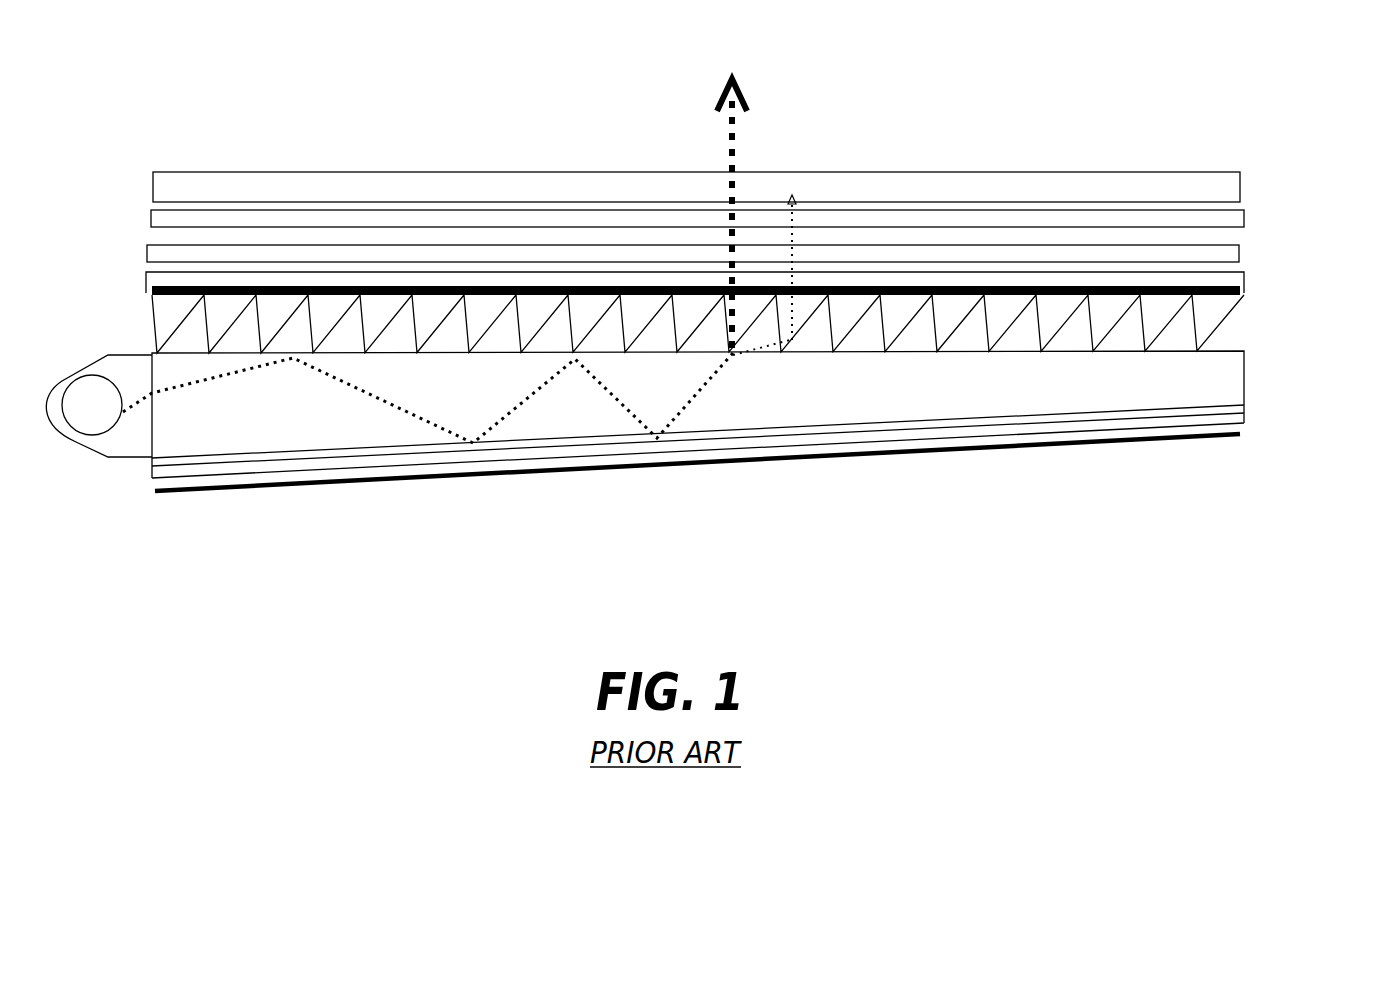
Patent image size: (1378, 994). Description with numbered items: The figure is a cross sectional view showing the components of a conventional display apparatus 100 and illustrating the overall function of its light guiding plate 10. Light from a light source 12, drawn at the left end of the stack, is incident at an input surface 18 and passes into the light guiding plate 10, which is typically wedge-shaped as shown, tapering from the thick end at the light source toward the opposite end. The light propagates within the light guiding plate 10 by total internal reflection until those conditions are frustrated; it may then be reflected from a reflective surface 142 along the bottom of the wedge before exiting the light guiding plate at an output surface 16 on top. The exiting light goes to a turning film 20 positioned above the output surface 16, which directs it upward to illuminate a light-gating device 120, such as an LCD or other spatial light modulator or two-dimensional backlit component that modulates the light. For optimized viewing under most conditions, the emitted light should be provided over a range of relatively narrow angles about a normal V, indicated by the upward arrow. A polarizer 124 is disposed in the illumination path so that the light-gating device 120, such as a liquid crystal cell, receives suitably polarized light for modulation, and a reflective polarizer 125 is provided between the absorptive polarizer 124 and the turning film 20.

The display apparatus 100 is at (178, 78).
The light-gating device 120 is at (612, 171).
The polarizer 124 is at (1244, 212).
The reflective polarizer 125 is at (1240, 248).
The turning film 20 is at (1243, 287).
The output surface 16 is at (1228, 351).
The light guiding plate 10 is at (1244, 377).
The reflective surface 142 is at (690, 468).
The input surface 18 is at (153, 438).
The light source 12 is at (80, 382).
The normal V is at (730, 162).